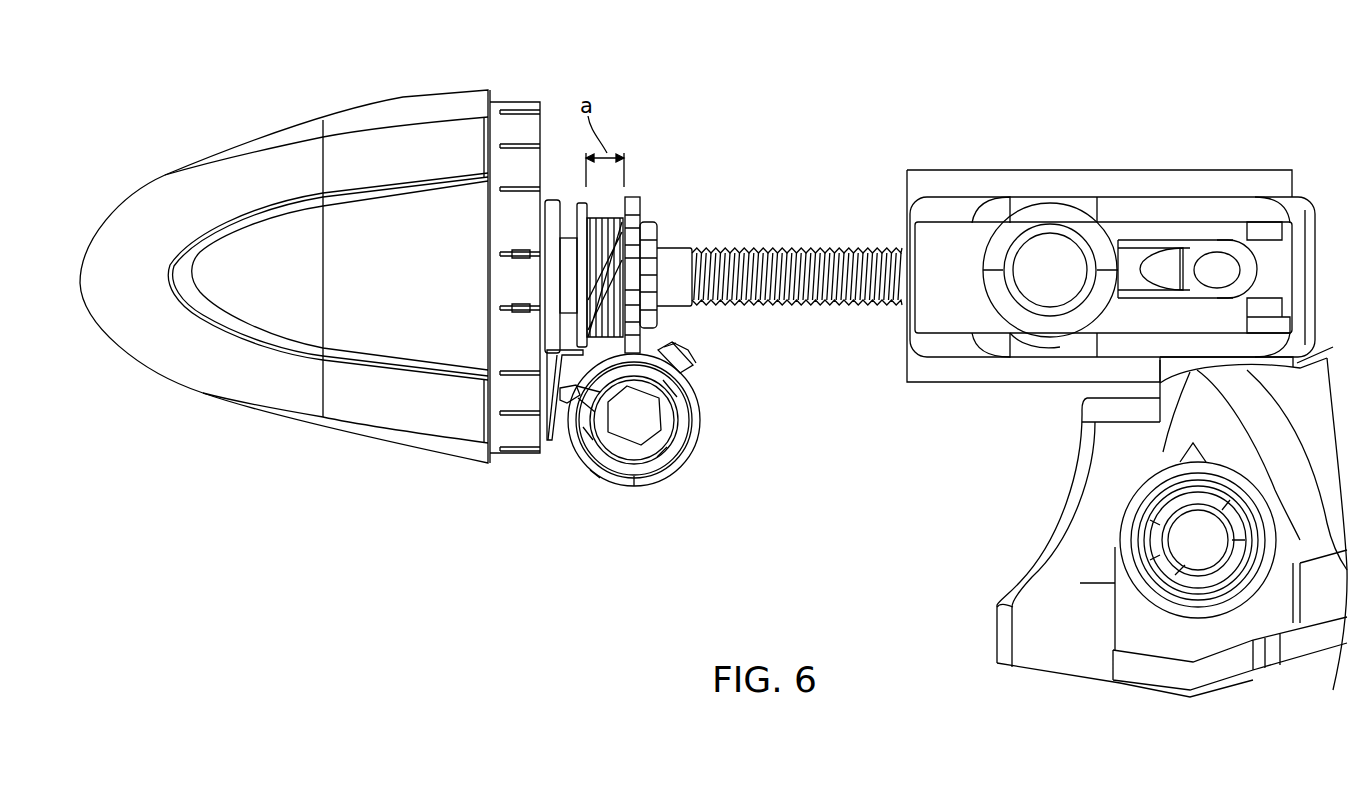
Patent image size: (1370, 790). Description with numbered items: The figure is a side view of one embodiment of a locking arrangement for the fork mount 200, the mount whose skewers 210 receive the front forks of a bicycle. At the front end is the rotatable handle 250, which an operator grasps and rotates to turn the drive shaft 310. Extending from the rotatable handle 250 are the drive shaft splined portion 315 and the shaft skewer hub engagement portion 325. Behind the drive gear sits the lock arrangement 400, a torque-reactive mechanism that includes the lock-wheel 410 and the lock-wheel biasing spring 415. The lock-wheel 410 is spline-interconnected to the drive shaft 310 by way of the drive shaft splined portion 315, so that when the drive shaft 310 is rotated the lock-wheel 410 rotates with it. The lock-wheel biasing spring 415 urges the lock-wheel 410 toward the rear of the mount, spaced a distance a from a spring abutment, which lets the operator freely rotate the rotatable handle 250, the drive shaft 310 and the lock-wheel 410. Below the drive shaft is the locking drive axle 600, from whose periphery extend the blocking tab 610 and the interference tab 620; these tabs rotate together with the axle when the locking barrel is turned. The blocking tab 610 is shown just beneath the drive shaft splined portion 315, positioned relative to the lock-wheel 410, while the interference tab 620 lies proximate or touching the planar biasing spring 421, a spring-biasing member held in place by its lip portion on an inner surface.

The fork mount 200 is at (1127, 370).
The skewers 210 is at (1048, 247).
The rotatable handle 250 is at (388, 117).
The drive shaft 310 is at (779, 238).
The drive shaft splined portion 315 is at (647, 223).
The shaft skewer hub engagement portion 325 is at (790, 263).
The lock arrangement 400 is at (612, 205).
The lock-wheel 410 is at (628, 197).
The lock-wheel biasing spring 415 is at (600, 237).
The planar biasing spring 421 is at (550, 380).
The locking drive axle 600 is at (641, 429).
The blocking tab 610 is at (662, 352).
The interference tab 620 is at (558, 390).